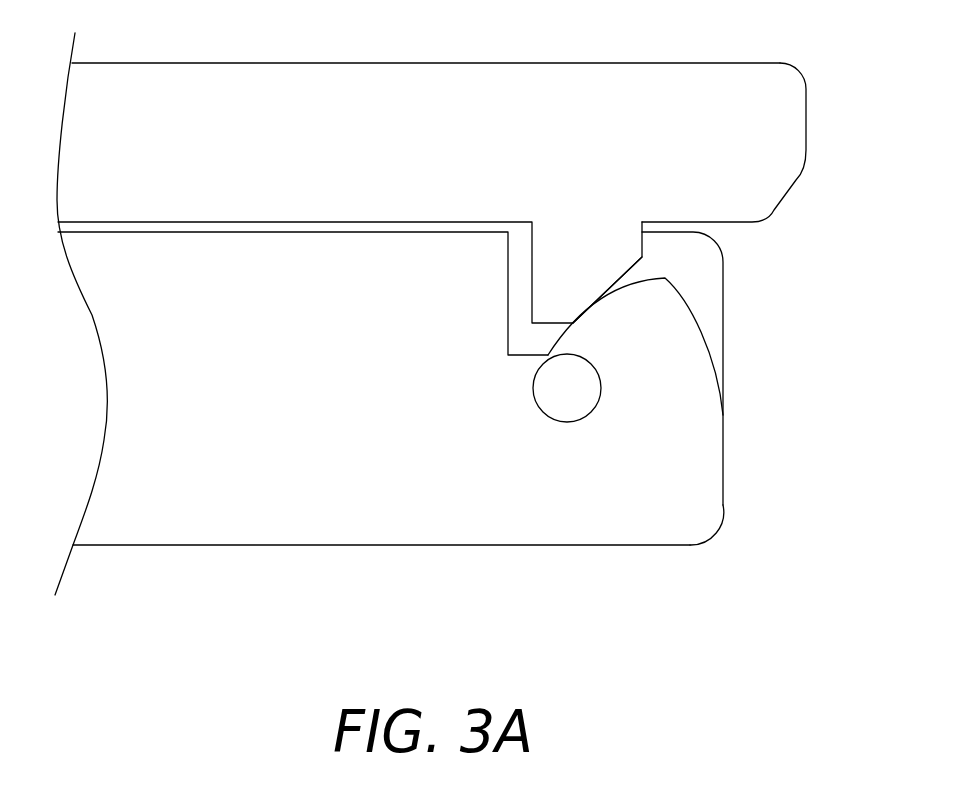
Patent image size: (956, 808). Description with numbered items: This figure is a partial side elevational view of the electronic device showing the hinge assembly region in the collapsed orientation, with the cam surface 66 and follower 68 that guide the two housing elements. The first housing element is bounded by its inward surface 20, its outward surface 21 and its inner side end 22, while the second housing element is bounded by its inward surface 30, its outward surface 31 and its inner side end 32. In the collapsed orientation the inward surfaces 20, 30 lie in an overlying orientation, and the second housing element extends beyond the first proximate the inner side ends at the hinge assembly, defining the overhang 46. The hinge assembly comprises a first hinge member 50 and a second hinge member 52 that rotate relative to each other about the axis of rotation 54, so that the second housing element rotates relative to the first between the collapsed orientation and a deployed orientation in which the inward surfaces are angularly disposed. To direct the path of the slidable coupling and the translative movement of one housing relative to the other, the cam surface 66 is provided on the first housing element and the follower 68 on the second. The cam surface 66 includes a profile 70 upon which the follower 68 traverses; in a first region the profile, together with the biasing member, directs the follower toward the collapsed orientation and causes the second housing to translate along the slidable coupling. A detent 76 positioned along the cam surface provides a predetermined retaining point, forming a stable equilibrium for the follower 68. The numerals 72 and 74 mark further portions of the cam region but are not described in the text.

The inward surface 20 is at (353, 246).
The outward surface 21 is at (213, 546).
The inner side end 22 is at (722, 554).
The inward surface 30 is at (294, 210).
The outward surface 31 is at (236, 62).
The inner side end 32 is at (800, 47).
The overhang 46 is at (786, 238).
The first hinge member 50 is at (640, 406).
The second hinge member 52 is at (598, 220).
The axis of rotation 54 is at (568, 423).
The cam surface 66 is at (692, 310).
The follower 68 is at (617, 282).
The profile 70 is at (710, 358).
The apex 72 is at (661, 276).
The intermediate cam portion 74 is at (722, 335).
The detent 76 is at (708, 285).